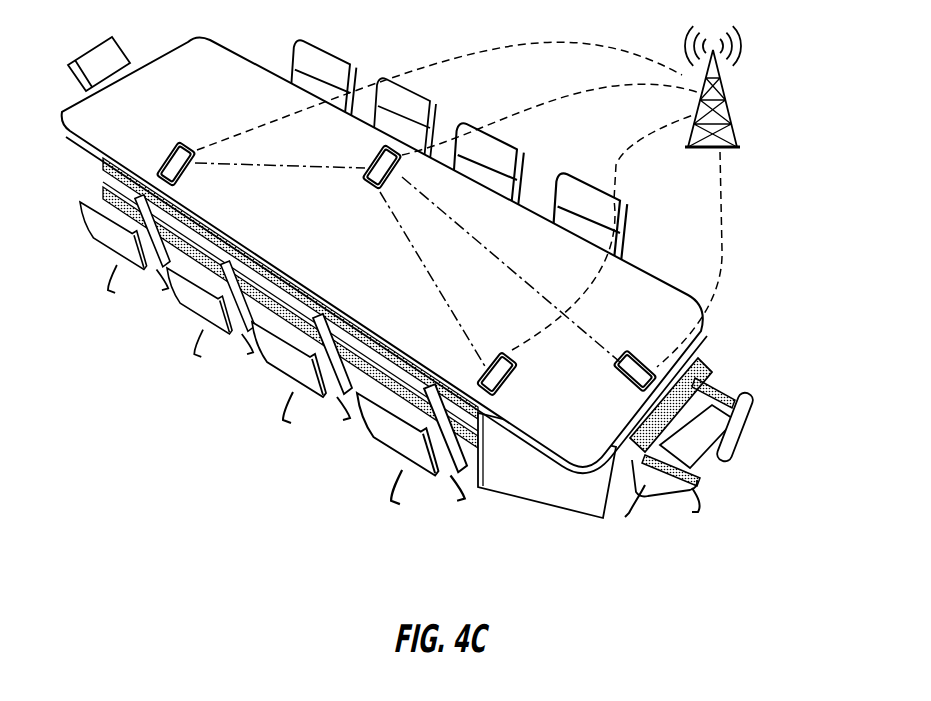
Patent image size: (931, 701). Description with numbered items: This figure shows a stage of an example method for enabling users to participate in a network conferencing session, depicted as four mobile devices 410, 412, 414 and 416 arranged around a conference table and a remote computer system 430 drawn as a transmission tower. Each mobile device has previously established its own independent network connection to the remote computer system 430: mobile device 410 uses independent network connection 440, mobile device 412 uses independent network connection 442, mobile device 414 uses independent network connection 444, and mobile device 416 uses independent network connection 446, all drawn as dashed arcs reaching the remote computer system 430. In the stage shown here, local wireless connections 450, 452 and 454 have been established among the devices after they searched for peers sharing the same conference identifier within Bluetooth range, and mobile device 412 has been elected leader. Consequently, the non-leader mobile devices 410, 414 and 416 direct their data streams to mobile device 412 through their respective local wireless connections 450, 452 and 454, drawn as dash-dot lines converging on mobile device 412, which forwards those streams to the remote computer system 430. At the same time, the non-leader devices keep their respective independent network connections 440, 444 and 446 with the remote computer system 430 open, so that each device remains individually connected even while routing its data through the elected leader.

The mobile device 410 is at (170, 146).
The mobile device 412 is at (375, 155).
The mobile device 414 is at (502, 362).
The mobile device 416 is at (632, 362).
The remote computer system 430 is at (728, 108).
The independent network connection 440 is at (473, 53).
The independent network connection 442 is at (563, 100).
The independent network connection 444 is at (647, 133).
The independent network connection 446 is at (728, 203).
The local wireless connection 450 is at (220, 165).
The local wireless connection 452 is at (405, 238).
The local wireless connection 454 is at (485, 249).